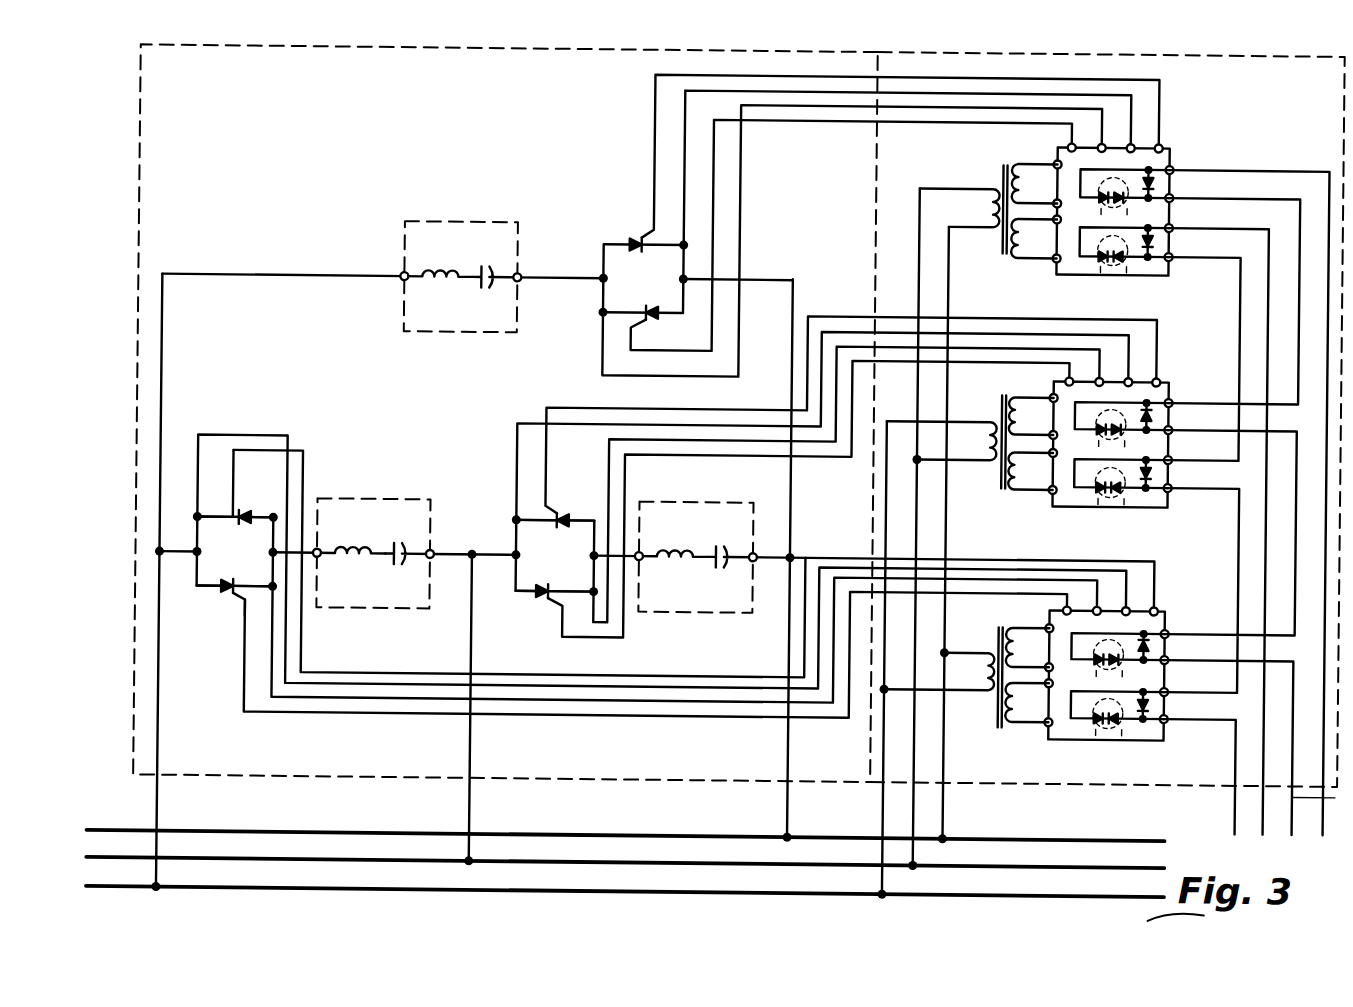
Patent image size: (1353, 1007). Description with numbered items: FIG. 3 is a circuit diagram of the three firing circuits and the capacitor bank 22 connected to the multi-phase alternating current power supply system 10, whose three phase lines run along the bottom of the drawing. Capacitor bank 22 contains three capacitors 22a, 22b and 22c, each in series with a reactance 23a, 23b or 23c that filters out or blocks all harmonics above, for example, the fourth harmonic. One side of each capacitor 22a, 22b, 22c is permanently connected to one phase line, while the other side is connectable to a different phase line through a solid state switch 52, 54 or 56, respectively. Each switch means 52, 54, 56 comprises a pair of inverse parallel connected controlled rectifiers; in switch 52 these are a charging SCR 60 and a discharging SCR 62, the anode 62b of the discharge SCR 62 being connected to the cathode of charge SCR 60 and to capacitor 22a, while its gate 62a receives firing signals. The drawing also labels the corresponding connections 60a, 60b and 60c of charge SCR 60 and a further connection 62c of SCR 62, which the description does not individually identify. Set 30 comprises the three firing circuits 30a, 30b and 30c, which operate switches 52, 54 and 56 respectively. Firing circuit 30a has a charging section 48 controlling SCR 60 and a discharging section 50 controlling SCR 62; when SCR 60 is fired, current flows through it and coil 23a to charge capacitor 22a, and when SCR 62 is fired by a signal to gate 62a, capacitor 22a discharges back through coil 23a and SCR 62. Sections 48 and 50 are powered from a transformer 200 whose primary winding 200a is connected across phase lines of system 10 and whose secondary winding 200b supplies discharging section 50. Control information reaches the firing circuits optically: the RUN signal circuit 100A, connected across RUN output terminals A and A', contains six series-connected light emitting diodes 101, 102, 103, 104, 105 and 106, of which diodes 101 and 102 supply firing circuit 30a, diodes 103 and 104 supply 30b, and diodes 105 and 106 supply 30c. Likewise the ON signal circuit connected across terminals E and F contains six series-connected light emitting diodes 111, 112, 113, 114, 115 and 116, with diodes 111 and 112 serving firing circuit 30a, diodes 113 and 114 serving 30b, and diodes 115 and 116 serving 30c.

The multi-phase alternating current electric power supply system 10 is at (139, 834).
The capacitor bank 22 is at (307, 783).
The capacitor 22a is at (400, 547).
The capacitor 22b is at (723, 550).
The capacitor 22c is at (480, 270).
The reactance 23a is at (352, 550).
The reactance 23b is at (674, 551).
The reactance 23c is at (435, 273).
The set of firing circuits 30 is at (1021, 782).
The firing circuit 30a is at (1026, 683).
The firing circuit 30b is at (1029, 454).
The firing circuit 30c is at (1046, 221).
The charging section 48 is at (1257, 521).
The discharging section 50 is at (1051, 611).
The solid state switch 52 is at (227, 535).
The solid state switch 54 is at (565, 567).
The solid state switch 56 is at (657, 287).
The charging SCR 60 is at (229, 598).
The thyristor gate 60a is at (262, 606).
The thyristor anode 60b is at (216, 592).
The thyristor cathode 60c is at (260, 581).
The discharging SCR 62 is at (243, 529).
The gate 62a is at (246, 513).
The anode 62b is at (250, 523).
The thyristor gate 62c is at (233, 518).
The RUN signal circuit 100A is at (1236, 791).
The light emitting diode 101 is at (1118, 719).
The light emitting diode 102 is at (1101, 718).
The light emitting diode 103 is at (1118, 488).
The light emitting diode 104 is at (1101, 487).
The light emitting diode 105 is at (1120, 257).
The light emitting diode 106 is at (1103, 256).
The light emitting diode 111 is at (1117, 649).
The light emitting diode 112 is at (1101, 648).
The light emitting diode 113 is at (1118, 419).
The light emitting diode 114 is at (1101, 418).
The light emitting diode 115 is at (1118, 187).
The light emitting diode 116 is at (1101, 186).
The transformer 200 is at (1000, 722).
The primary winding 200a is at (990, 688).
The secondary winding 200b is at (1014, 625).